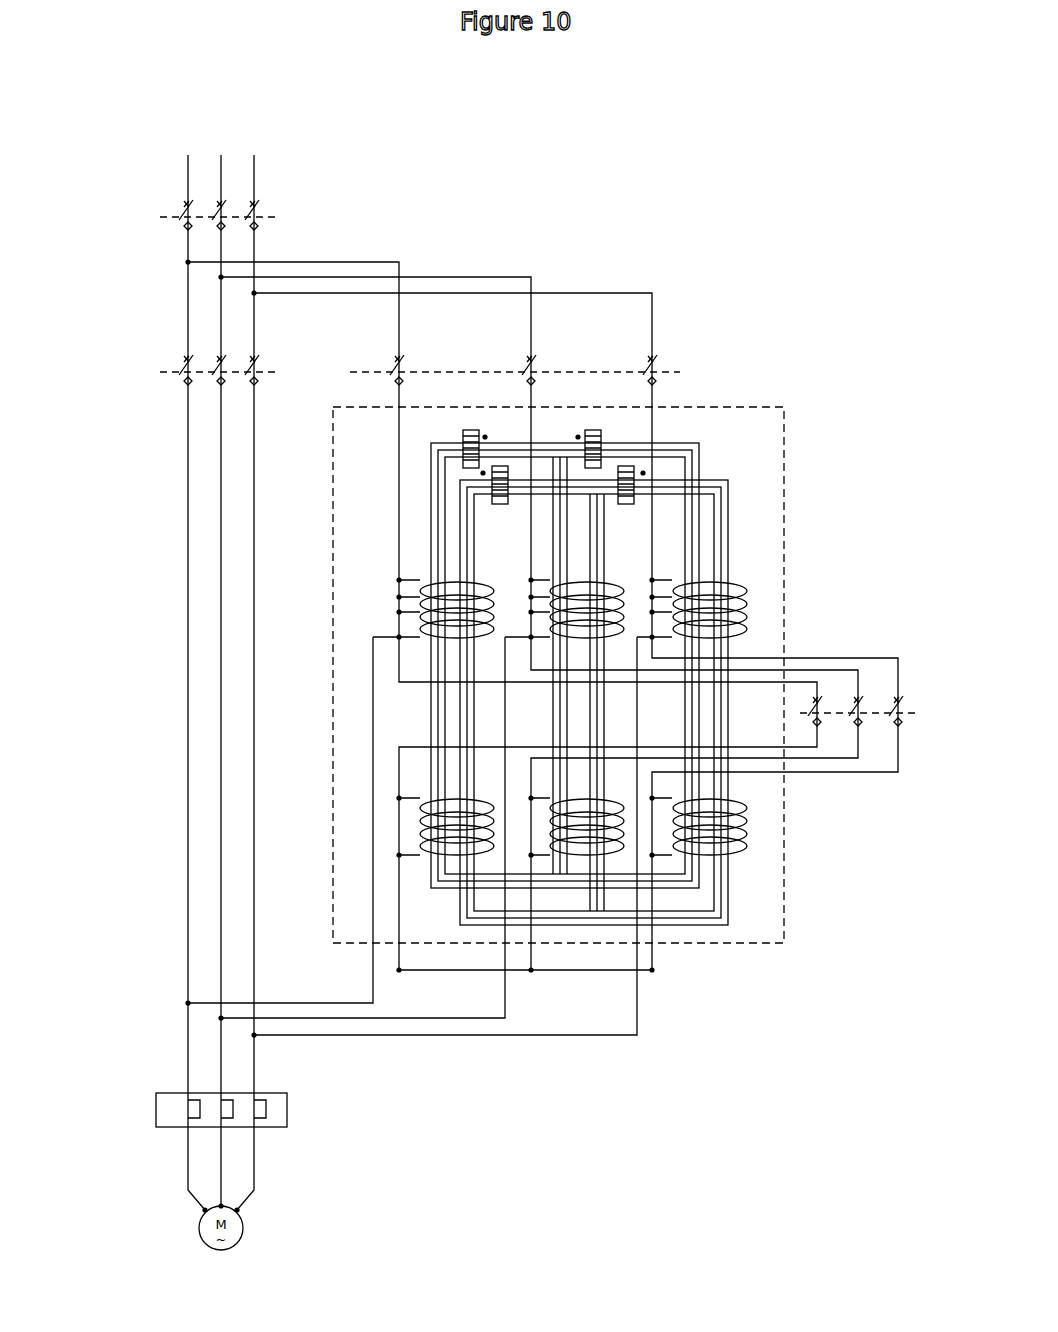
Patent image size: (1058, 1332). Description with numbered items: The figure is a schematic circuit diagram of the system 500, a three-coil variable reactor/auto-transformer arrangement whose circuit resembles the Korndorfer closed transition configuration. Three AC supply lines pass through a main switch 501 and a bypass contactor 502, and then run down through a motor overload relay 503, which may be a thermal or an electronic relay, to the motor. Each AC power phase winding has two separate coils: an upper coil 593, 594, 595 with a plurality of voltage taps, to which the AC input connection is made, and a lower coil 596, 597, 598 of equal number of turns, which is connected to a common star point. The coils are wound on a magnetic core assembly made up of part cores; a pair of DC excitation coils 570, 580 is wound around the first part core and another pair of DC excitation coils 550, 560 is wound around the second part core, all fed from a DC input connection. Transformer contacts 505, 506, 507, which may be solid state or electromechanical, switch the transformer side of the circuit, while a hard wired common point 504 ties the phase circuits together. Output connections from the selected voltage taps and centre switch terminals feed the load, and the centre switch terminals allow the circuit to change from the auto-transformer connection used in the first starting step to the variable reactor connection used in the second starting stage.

The system 500 is at (762, 198).
The main switch 501 is at (259, 218).
The bypass contactor 502 is at (180, 362).
The motor overload relay 503 is at (288, 1112).
The common point 504 is at (893, 709).
The transformer contact 505 is at (399, 366).
The transformer contact 506 is at (521, 368).
The transformer contact 507 is at (654, 368).
The DC excitation coil 550 is at (468, 428).
The DC excitation coil 560 is at (602, 436).
The DC excitation coil 570 is at (500, 480).
The DC excitation coil 580 is at (638, 470).
The upper coil 593 is at (392, 606).
The upper coil 594 is at (620, 583).
The upper coil 595 is at (728, 584).
The lower coil 596 is at (412, 822).
The lower coil 597 is at (598, 848).
The lower coil 598 is at (750, 832).